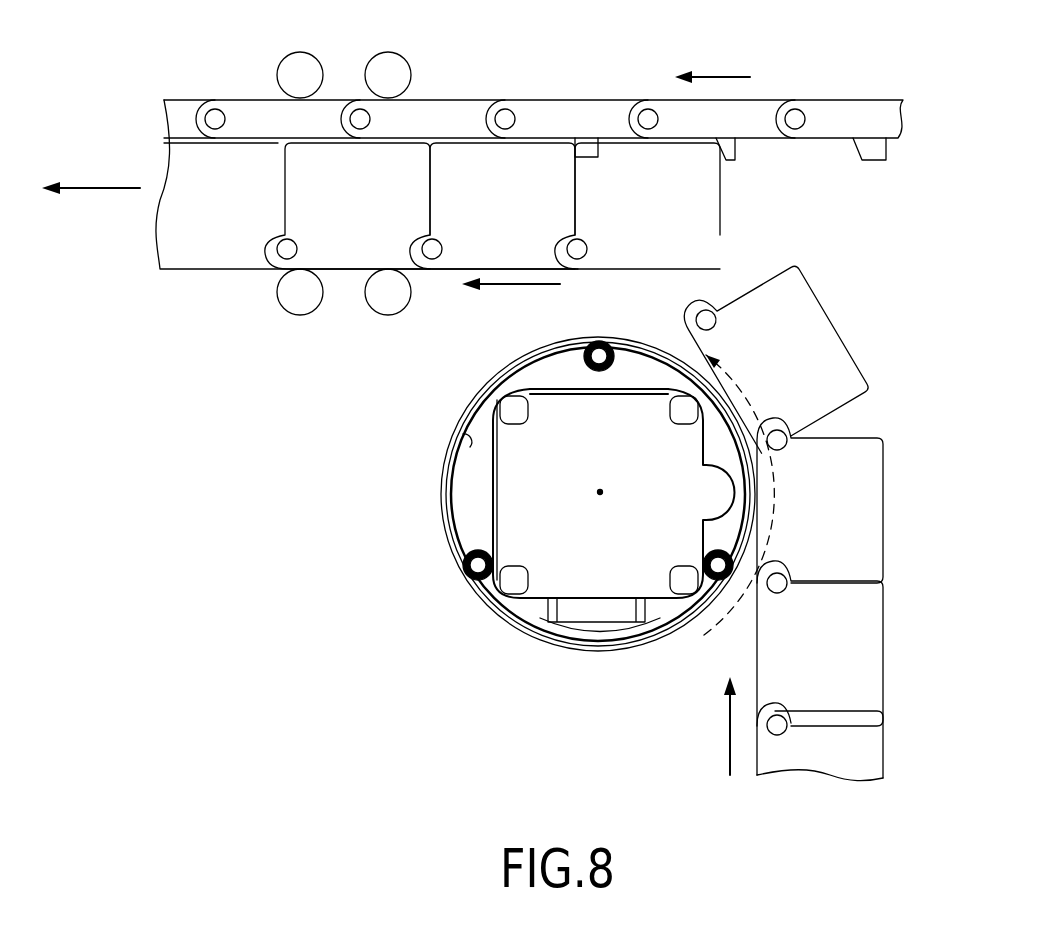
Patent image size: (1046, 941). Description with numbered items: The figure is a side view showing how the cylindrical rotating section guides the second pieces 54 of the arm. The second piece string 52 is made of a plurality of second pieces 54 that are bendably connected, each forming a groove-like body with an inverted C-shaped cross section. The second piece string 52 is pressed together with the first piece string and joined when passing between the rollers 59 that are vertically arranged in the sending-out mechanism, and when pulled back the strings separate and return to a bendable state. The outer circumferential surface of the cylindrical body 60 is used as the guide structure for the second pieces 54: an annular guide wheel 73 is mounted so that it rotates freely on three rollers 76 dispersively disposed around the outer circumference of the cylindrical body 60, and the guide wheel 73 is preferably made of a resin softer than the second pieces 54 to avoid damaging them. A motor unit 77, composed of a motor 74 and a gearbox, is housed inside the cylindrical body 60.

The second piece string 52 is at (830, 100).
The second piece 54 is at (883, 515).
The rollers 59 is at (408, 64).
The cylindrical body 60 is at (468, 442).
The annular body (guide wheel) 73 is at (620, 651).
The motor 74 is at (585, 577).
The rollers 76 is at (562, 365).
The motor unit 77 is at (478, 497).